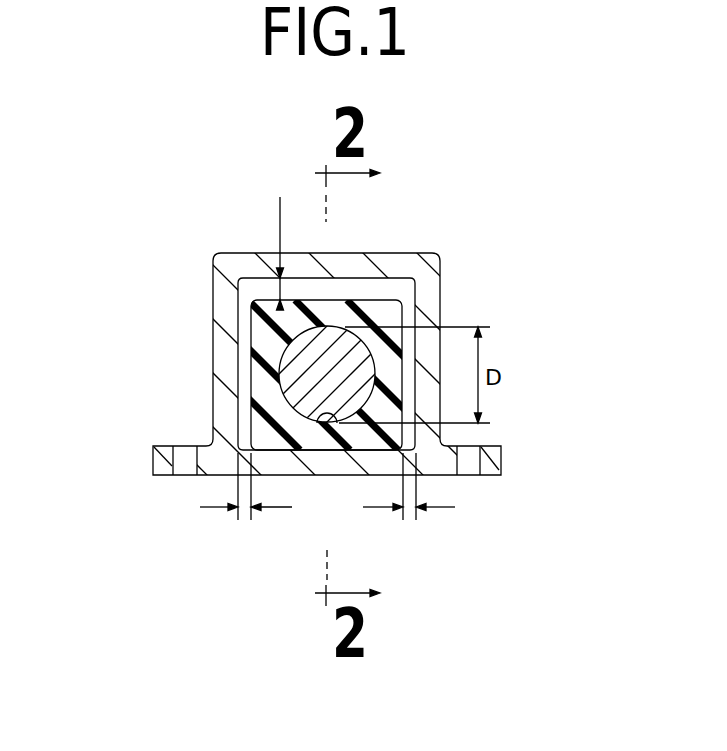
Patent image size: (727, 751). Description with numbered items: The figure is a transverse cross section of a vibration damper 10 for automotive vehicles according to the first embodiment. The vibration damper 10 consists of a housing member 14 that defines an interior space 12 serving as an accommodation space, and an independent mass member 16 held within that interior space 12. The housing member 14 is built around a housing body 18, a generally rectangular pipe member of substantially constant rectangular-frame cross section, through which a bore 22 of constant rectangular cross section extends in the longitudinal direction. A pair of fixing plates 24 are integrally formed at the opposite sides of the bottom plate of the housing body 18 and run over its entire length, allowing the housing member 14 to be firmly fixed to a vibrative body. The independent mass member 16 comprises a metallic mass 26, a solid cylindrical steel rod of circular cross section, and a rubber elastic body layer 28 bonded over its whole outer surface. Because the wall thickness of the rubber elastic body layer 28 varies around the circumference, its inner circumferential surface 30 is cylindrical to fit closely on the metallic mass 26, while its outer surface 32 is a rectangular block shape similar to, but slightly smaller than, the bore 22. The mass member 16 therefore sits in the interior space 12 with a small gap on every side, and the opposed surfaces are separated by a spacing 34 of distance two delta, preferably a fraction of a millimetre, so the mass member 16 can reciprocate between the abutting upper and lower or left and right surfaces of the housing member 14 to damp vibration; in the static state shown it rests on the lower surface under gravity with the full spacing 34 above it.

The vibration damper 10 is at (441, 228).
The interior space 12 is at (393, 307).
The housing member 14 is at (349, 355).
The independent mass member 16 is at (257, 285).
The housing body 18 is at (228, 342).
The bore 22 is at (416, 296).
The fixing plates 24 is at (163, 462).
The metallic mass 26 is at (302, 398).
The rubber elastic body layer 28 is at (295, 357).
The inner circumferential surface 30 is at (342, 423).
The outer surface 32 is at (248, 330).
The spacing 34 is at (245, 415).